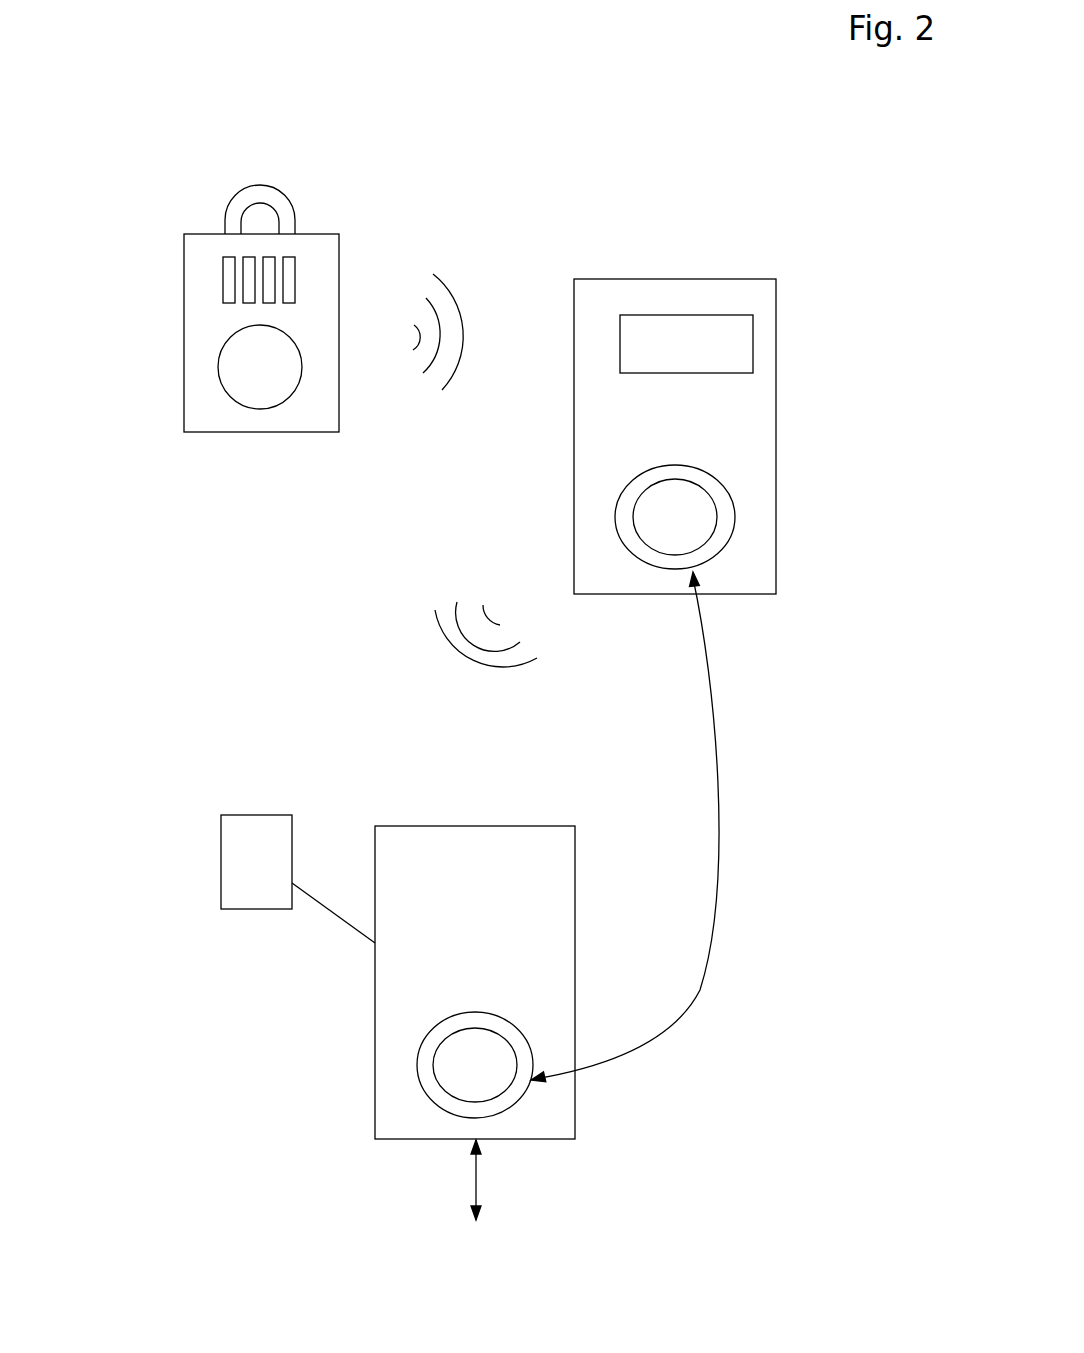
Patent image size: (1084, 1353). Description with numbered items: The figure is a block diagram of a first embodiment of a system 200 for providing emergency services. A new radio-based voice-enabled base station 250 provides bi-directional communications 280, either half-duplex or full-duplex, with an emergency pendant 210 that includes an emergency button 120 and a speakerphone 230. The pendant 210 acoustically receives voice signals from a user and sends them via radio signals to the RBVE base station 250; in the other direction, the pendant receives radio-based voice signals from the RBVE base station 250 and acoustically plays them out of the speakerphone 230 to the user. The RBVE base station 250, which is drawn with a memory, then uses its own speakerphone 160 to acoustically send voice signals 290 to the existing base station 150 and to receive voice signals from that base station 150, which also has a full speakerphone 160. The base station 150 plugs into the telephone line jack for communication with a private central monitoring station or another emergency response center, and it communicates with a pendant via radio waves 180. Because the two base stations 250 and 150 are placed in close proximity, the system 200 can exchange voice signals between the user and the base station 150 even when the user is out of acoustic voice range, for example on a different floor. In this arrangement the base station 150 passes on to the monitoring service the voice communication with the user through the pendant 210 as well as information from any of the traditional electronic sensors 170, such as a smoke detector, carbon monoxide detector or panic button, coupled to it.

The system 200 is at (288, 86).
The emergency pendant 210 is at (183, 267).
The speakerphone 230 is at (297, 252).
The emergency button 120 is at (253, 407).
The bi-directional communications 280 is at (461, 297).
The radio-based voice-enabled (RBVE) base station 250 is at (669, 279).
The speakerphone 160 is at (718, 557).
The voice signals 290 is at (717, 930).
The radio waves 180 is at (428, 620).
The electronic sensors 170 is at (240, 815).
The base station 150 is at (468, 826).